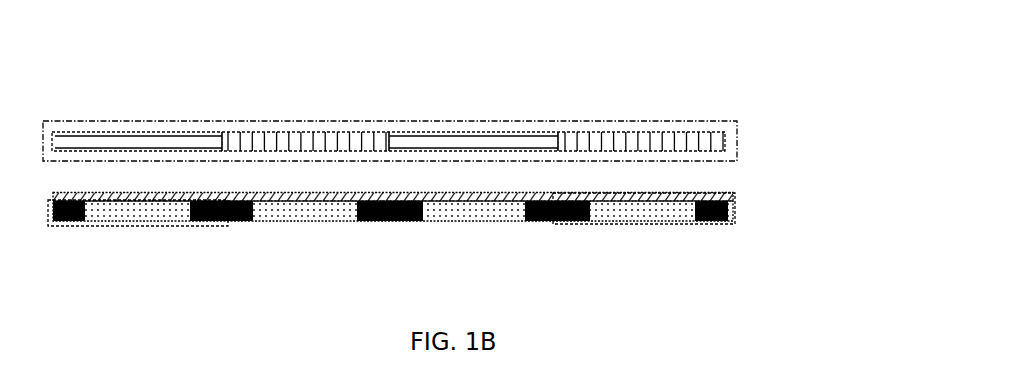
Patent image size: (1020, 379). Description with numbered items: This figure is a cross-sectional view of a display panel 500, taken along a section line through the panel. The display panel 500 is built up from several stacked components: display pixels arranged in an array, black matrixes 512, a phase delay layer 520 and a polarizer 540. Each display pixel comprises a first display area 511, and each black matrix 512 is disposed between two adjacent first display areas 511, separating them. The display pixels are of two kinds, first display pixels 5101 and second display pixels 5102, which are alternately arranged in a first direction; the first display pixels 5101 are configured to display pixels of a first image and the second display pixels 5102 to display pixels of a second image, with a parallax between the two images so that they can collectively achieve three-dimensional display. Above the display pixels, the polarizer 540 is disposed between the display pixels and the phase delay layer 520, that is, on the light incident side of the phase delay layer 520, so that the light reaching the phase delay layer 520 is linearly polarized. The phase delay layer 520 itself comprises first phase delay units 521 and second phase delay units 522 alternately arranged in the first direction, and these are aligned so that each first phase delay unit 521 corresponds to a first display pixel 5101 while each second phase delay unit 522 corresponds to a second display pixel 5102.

The display panel 500 is at (770, 74).
The phase delay layer 520 is at (737, 121).
The first phase delay unit 521 is at (105, 137).
The second phase delay unit 522 is at (726, 150).
The polarizer 540 is at (726, 191).
The first display area 511 is at (642, 215).
The black matrix 512 is at (727, 215).
The first display pixel 5101 is at (212, 225).
The second display pixel 5102 is at (569, 225).